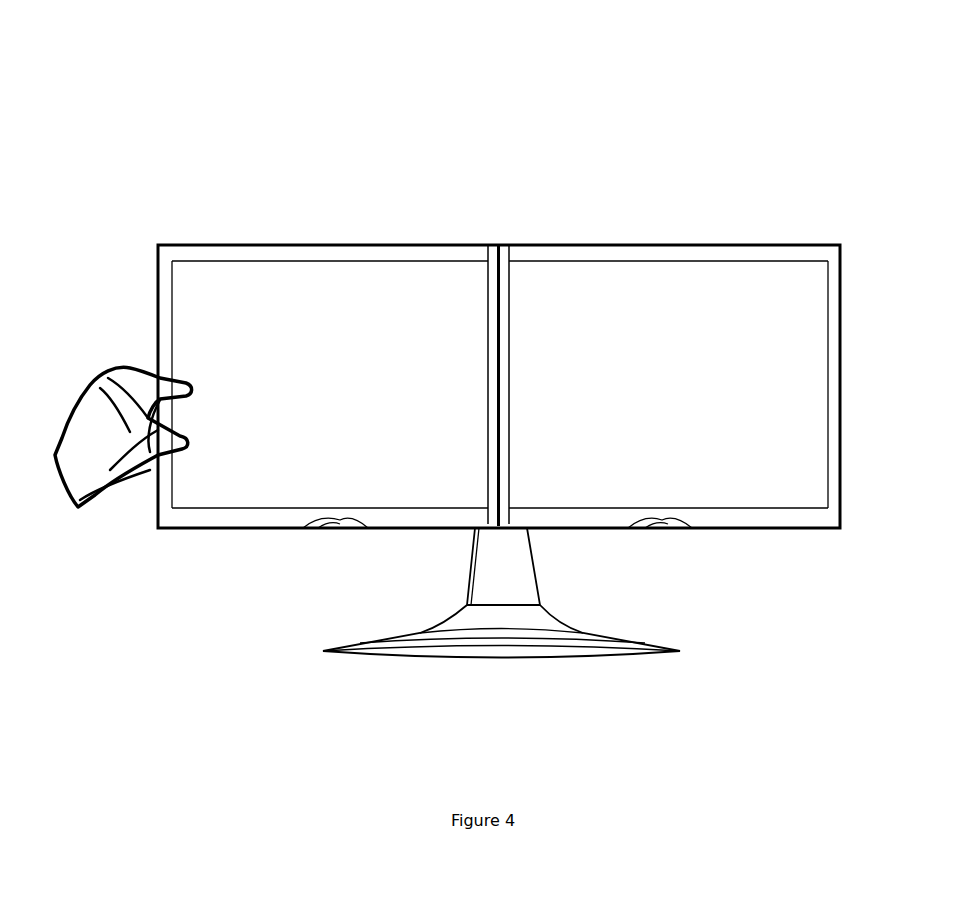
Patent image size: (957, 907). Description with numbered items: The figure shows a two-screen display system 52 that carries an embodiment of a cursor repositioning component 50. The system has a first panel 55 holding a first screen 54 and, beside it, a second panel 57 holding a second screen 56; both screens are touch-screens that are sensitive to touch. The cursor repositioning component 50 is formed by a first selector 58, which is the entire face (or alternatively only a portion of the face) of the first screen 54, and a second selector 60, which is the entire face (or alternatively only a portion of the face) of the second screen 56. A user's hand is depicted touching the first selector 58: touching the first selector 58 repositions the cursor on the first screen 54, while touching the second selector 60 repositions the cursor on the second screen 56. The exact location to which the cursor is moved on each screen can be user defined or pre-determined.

The cursor repositioning component 50 is at (140, 548).
The two-screen display system 52 is at (506, 180).
The first screen 54 is at (340, 290).
The first panel 55 is at (200, 245).
The second screen 56 is at (640, 290).
The second panel 57 is at (764, 245).
The first selector 58 is at (330, 468).
The second selector 60 is at (670, 468).